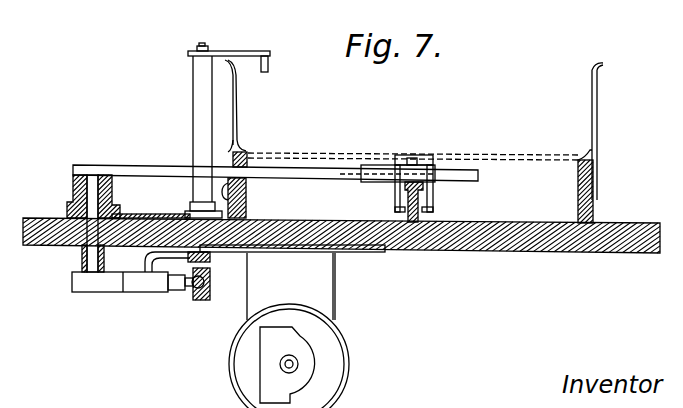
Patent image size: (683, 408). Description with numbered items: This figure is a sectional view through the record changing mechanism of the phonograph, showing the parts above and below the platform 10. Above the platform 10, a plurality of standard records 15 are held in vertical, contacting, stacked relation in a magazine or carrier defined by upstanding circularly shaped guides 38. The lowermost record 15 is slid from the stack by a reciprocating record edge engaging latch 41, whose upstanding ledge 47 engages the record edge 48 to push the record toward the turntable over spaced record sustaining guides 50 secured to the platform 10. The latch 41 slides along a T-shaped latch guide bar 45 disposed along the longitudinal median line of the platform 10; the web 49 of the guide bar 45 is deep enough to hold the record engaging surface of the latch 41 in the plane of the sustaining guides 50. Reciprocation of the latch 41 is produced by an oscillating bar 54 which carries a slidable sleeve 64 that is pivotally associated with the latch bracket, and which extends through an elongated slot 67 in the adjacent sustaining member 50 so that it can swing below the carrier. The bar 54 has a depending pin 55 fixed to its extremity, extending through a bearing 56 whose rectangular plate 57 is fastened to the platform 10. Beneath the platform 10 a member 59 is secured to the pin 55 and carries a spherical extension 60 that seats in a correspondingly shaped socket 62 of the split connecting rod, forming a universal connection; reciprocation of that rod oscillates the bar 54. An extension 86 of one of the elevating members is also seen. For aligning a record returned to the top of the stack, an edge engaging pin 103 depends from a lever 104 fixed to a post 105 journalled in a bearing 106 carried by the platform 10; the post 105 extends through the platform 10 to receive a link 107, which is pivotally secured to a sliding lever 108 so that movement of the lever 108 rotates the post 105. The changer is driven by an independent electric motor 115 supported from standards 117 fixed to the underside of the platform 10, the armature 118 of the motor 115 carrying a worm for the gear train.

The platform 10 is at (520, 240).
The record 15 is at (533, 160).
The upstanding circularly shaped guide 38 is at (232, 64).
The record edge engaging latch 41 is at (420, 163).
The latch guide bar 45 is at (418, 182).
The upstanding ledge 47 is at (403, 168).
The record edge 48 is at (495, 155).
The web 49 is at (434, 215).
The record sustaining guide 50 is at (248, 190).
The oscillating bar 54 is at (128, 165).
The depending pin 55 is at (94, 176).
The bearing 56 is at (73, 172).
The plate 57 is at (160, 214).
The member 59 is at (100, 292).
The spherical extension 60 is at (197, 290).
The socket 62 is at (204, 285).
The slidable sleeve 64 is at (372, 170).
The elongated slot 67 is at (247, 153).
The extension 86 is at (250, 216).
The edge engaging pin 103 is at (268, 64).
The lever 104 is at (252, 43).
The post 105 is at (200, 77).
The bearing 106 is at (193, 200).
The link 107 is at (208, 261).
The lever 108 is at (166, 258).
The electric motor 115 is at (328, 375).
The standard 117 is at (315, 286).
The armature 118 is at (298, 360).